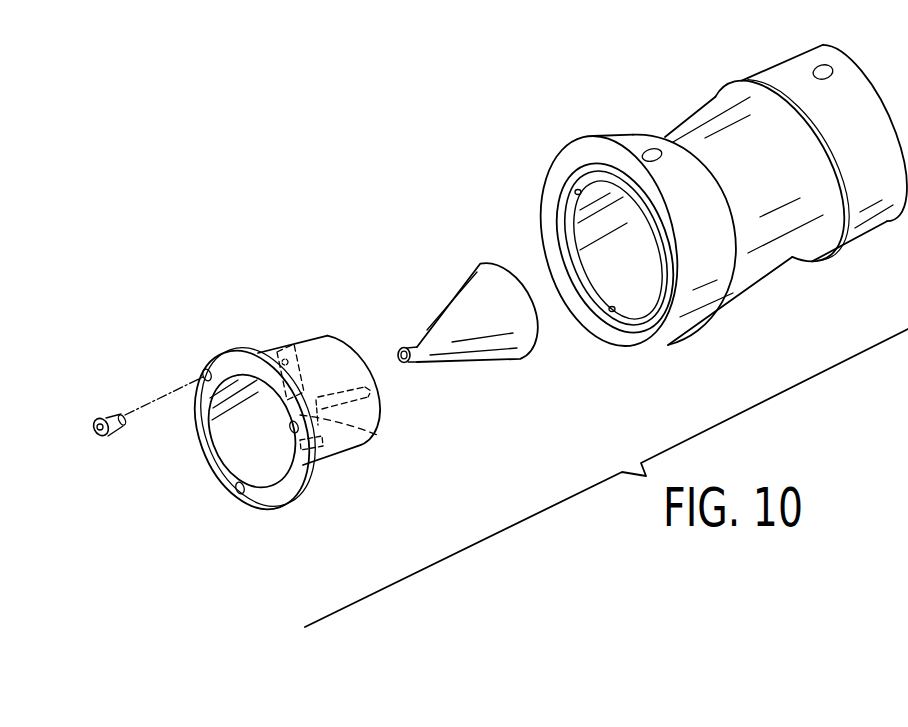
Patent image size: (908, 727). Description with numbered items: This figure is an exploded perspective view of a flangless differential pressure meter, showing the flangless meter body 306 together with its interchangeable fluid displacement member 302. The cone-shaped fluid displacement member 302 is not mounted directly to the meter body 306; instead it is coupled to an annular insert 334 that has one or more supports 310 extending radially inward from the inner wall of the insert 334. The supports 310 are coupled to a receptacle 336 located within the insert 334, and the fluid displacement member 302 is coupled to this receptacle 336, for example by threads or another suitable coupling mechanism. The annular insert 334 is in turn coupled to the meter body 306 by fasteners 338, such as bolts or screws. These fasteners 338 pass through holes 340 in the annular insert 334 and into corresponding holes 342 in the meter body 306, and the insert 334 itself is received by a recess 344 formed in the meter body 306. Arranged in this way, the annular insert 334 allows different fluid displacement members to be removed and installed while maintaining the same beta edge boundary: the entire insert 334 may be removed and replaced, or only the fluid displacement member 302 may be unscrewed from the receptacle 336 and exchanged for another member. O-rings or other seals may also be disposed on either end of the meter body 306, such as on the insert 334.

The fluid displacement member 302 is at (452, 307).
The meter body 306 is at (770, 250).
The supports 310 is at (320, 390).
The annular insert 334 is at (337, 452).
The receptacle 336 is at (328, 375).
The fasteners 338 is at (97, 420).
The holes 340 is at (205, 376).
The holes 342 is at (575, 190).
The recess 344 is at (633, 317).